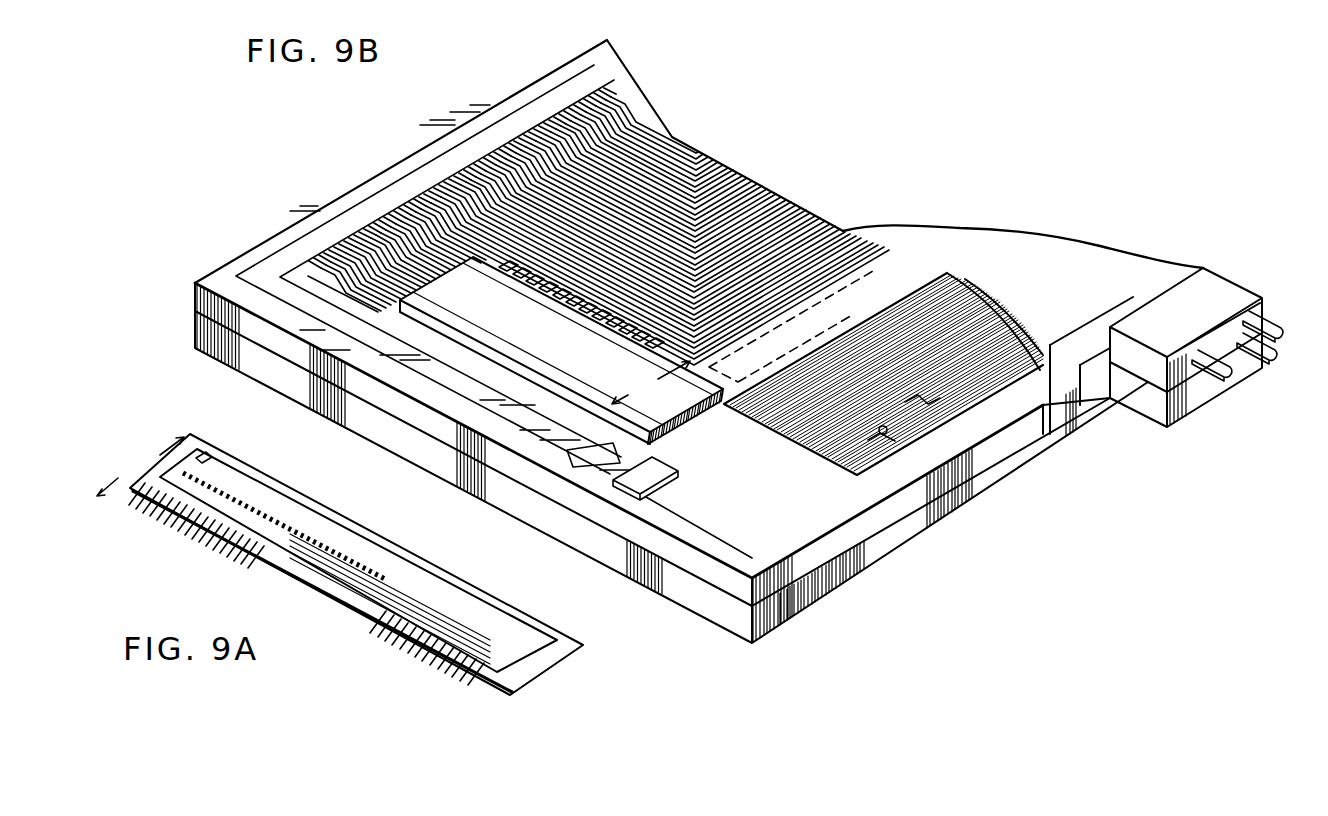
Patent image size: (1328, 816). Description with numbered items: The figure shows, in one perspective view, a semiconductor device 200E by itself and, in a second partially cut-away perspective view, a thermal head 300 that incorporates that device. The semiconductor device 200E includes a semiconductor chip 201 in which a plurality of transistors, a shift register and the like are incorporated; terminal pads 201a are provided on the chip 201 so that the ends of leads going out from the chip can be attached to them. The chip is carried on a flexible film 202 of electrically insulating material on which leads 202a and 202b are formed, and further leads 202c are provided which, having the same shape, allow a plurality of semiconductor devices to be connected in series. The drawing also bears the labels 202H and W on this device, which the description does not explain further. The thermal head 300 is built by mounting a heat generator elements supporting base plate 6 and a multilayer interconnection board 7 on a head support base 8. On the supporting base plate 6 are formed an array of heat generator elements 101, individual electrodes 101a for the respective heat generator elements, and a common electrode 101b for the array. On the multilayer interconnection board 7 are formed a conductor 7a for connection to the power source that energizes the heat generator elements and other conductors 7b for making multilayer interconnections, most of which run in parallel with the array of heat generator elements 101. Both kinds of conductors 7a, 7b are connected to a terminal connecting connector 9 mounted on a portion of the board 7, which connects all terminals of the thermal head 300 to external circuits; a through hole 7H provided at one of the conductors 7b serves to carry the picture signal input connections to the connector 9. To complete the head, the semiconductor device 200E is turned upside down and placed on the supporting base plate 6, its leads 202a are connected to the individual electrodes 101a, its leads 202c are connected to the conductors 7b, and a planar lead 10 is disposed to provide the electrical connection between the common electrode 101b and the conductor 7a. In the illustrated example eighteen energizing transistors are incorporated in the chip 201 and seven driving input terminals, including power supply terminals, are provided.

In FIG. 9B, the thermal head 300 is at (477, 73).
In FIG. 9B, the heat generator elements 101 is at (618, 68).
In FIG. 9B, the individual electrodes 101a is at (830, 222).
In FIG. 9B, the common electrode 101b is at (611, 60).
In FIG. 9B, the heat generator elements supporting base plate 6 is at (843, 252).
In FIG. 9B, the semiconductor chip 201 is at (893, 290).
In FIG. 9A, the semiconductor chip 201 is at (330, 603).
In FIG. 9A, the terminal pads 201a is at (212, 483).
In FIG. 9B, the flexible film 202 is at (740, 495).
In FIG. 9A, the flexible film 202 is at (547, 668).
In FIG. 9B, the leads 202a is at (472, 355).
In FIG. 9A, the leads 202a is at (262, 590).
In FIG. 9A, the leads 202b is at (557, 640).
In FIG. 9B, the leads 202c is at (850, 447).
In FIG. 9A, the leads 202c is at (480, 697).
In FIG. 9A, the hole in cover plate 202H is at (200, 458).
In FIG. 9B, the semiconductor device 200E is at (629, 378).
In FIG. 9A, the semiconductor device 200E is at (373, 551).
In FIG. 9B, the planar lead 10 is at (625, 475).
In FIG. 9B, the multilayer interconnection board 7 is at (1022, 420).
In FIG. 9B, the conductor 7a is at (932, 445).
In FIG. 9B, the conductors 7b is at (1040, 352).
In FIG. 9B, the through hole 7H is at (888, 437).
In FIG. 9B, the head support base 8 is at (1018, 243).
In FIG. 9B, the terminal connecting connector 9 is at (1212, 296).
In FIG. 9B, the width of connection member W is at (651, 382).
In FIG. 9A, the width of connection member W is at (140, 466).